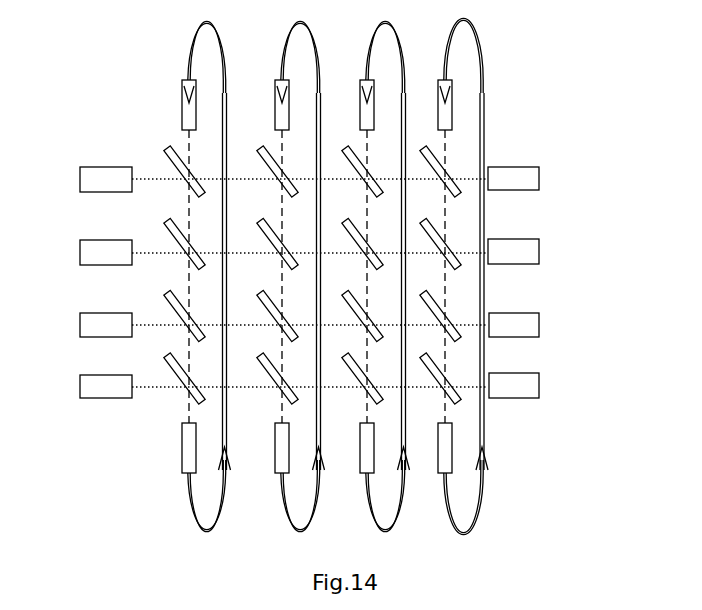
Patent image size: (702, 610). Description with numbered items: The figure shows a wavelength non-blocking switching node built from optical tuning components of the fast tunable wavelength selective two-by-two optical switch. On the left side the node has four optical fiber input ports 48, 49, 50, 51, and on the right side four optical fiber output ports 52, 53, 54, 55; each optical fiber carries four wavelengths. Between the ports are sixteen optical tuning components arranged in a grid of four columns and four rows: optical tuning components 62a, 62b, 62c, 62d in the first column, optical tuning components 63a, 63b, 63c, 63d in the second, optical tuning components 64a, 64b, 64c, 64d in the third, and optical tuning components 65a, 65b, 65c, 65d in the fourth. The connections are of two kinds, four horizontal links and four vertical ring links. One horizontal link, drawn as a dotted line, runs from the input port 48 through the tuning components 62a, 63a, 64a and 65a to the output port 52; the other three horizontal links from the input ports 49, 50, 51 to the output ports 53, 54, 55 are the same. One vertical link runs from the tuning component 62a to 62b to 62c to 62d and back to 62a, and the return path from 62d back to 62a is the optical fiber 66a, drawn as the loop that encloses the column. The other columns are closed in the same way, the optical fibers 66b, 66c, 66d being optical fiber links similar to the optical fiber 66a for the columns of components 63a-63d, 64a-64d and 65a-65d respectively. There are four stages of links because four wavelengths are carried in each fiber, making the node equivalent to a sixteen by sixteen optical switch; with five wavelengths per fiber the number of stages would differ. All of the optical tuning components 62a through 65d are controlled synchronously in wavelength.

The optical fiber input port 48 is at (101, 150).
The optical fiber input port 49 is at (101, 223).
The optical fiber input port 50 is at (101, 306).
The optical fiber input port 51 is at (101, 368).
The optical fiber output port 52 is at (500, 150).
The optical fiber output port 53 is at (500, 223).
The optical fiber output port 54 is at (507, 310).
The optical fiber output port 55 is at (500, 356).
The optical tuning component 62a is at (179, 164).
The optical tuning component 62b is at (179, 236).
The optical tuning component 62c is at (179, 308).
The optical tuning component 62d is at (179, 371).
The optical tuning component 63a is at (272, 164).
The optical tuning component 63b is at (272, 236).
The optical tuning component 63c is at (272, 308).
The optical tuning component 63d is at (272, 371).
The optical tuning component 64a is at (357, 164).
The optical tuning component 64b is at (357, 236).
The optical tuning component 64c is at (357, 308).
The optical tuning component 64d is at (357, 371).
The optical tuning component 65a is at (435, 164).
The optical tuning component 65b is at (435, 236).
The optical tuning component 65c is at (435, 308).
The optical tuning component 65d is at (435, 371).
The optical fiber 66a is at (219, 23).
The optical fiber link 66b is at (304, 23).
The optical fiber link 66c is at (389, 34).
The optical fiber link 66d is at (476, 34).